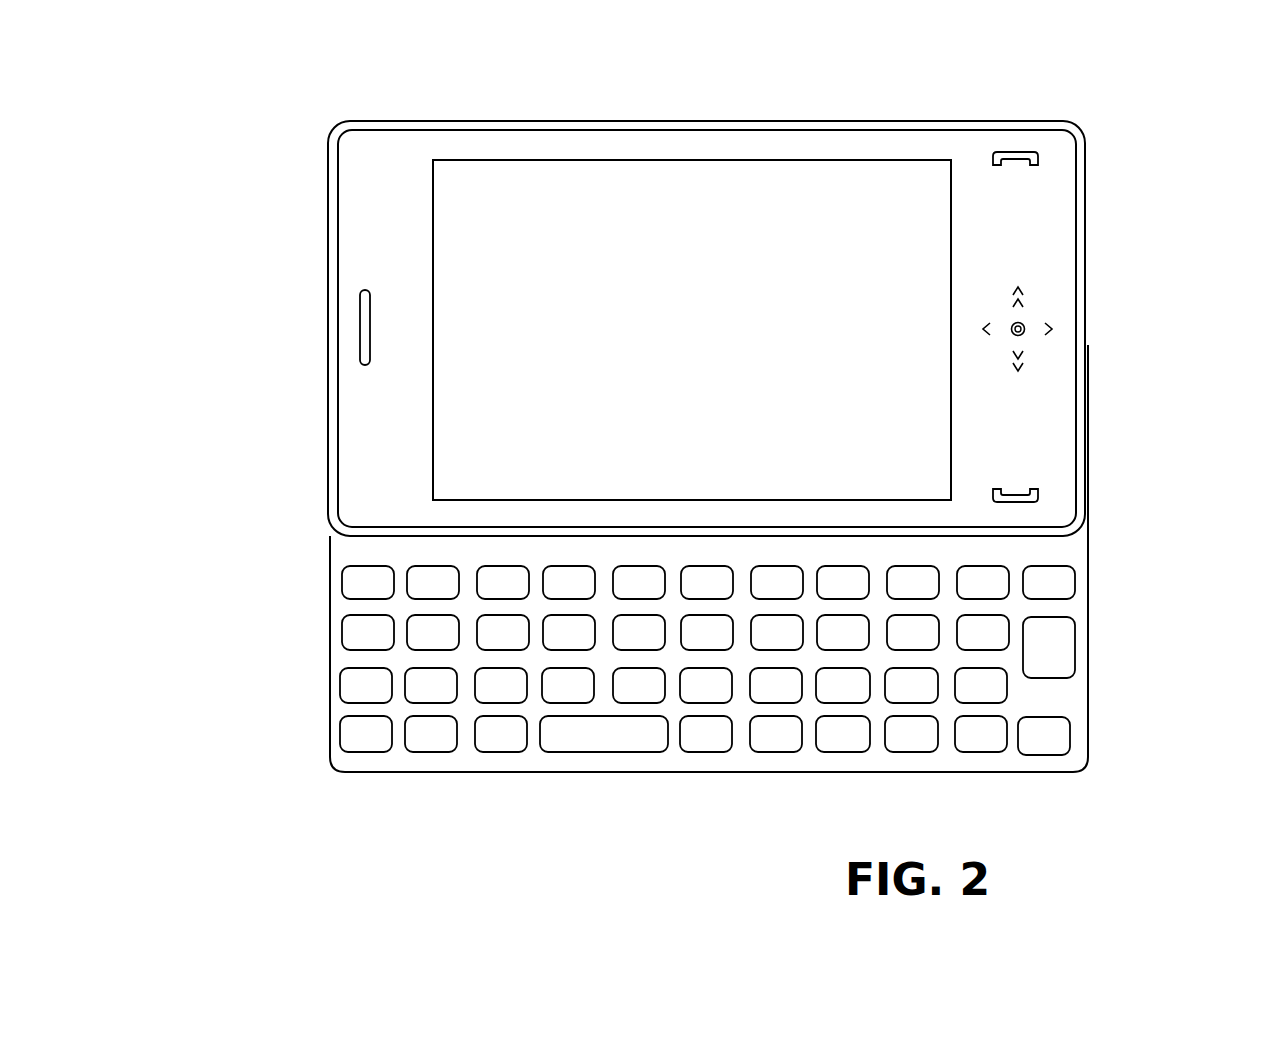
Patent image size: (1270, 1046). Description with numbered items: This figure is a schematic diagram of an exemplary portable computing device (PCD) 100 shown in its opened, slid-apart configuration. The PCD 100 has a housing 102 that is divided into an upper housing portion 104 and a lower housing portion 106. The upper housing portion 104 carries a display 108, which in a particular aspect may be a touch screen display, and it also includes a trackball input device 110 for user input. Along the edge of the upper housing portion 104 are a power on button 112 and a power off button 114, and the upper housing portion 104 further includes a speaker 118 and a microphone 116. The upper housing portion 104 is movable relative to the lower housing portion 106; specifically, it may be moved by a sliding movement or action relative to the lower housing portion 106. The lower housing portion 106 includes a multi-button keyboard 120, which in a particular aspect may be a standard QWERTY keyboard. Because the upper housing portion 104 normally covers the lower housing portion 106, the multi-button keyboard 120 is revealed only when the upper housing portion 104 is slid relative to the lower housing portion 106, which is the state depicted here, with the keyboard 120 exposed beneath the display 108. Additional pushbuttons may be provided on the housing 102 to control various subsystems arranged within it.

The portable computing device 100 is at (233, 97).
The housing 102 is at (480, 120).
The upper housing portion 104 is at (697, 147).
The lower housing portion 106 is at (1077, 700).
The display 108 is at (745, 177).
The trackball input device 110 is at (1025, 335).
The power on button 112 is at (1035, 500).
The power off button 114 is at (1036, 163).
The microphone 116 is at (1100, 465).
The speaker 118 is at (360, 305).
The multi-button keyboard 120 is at (1078, 772).